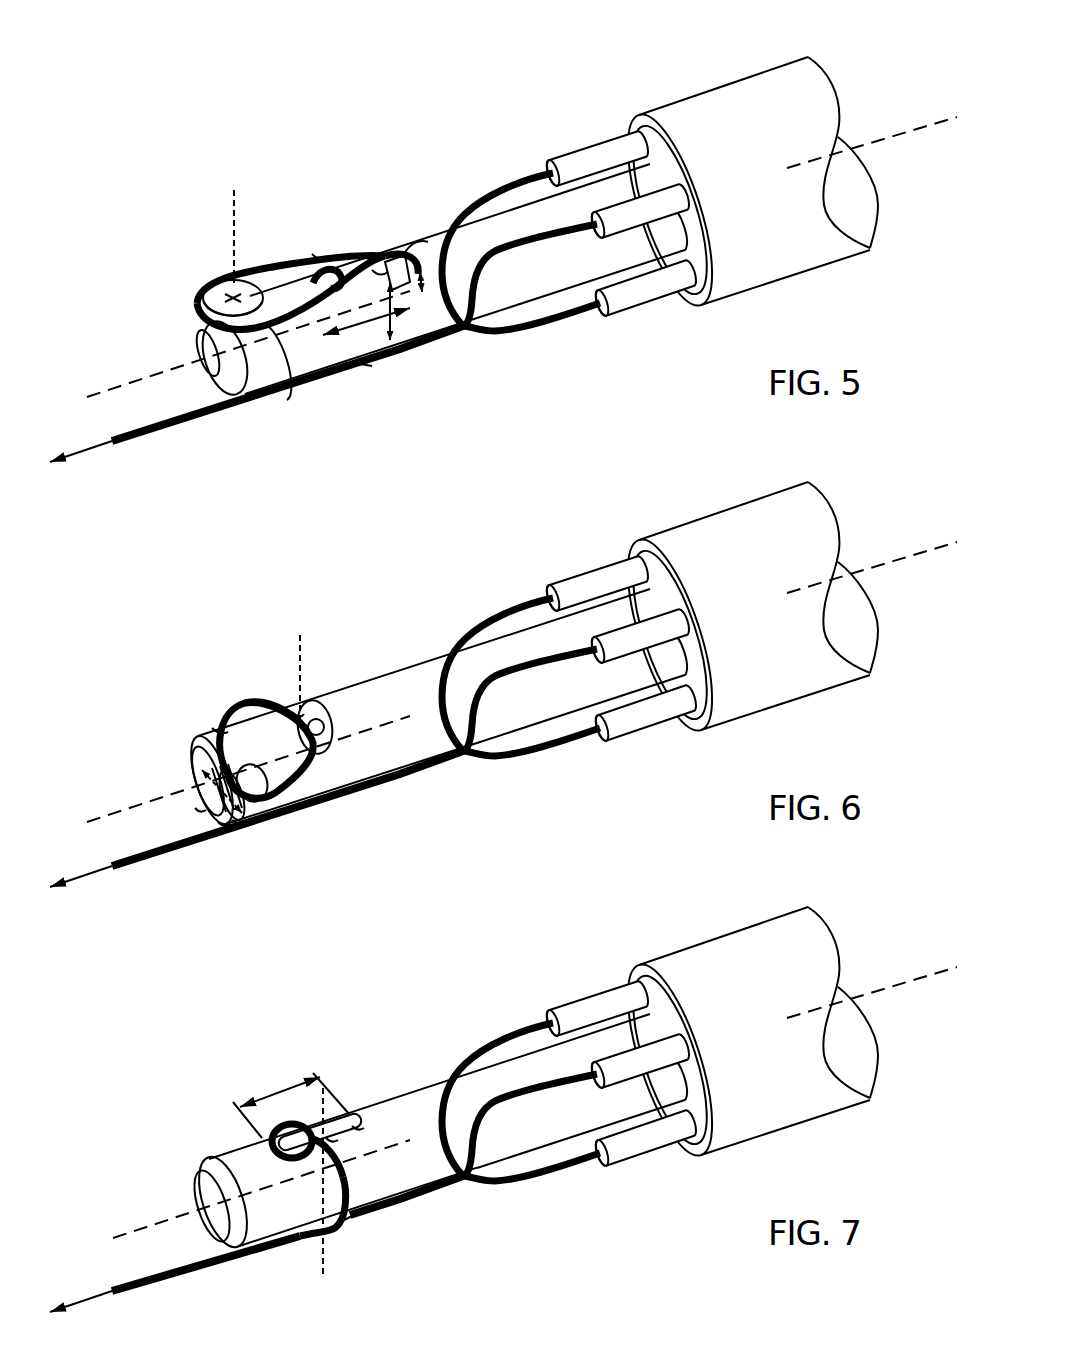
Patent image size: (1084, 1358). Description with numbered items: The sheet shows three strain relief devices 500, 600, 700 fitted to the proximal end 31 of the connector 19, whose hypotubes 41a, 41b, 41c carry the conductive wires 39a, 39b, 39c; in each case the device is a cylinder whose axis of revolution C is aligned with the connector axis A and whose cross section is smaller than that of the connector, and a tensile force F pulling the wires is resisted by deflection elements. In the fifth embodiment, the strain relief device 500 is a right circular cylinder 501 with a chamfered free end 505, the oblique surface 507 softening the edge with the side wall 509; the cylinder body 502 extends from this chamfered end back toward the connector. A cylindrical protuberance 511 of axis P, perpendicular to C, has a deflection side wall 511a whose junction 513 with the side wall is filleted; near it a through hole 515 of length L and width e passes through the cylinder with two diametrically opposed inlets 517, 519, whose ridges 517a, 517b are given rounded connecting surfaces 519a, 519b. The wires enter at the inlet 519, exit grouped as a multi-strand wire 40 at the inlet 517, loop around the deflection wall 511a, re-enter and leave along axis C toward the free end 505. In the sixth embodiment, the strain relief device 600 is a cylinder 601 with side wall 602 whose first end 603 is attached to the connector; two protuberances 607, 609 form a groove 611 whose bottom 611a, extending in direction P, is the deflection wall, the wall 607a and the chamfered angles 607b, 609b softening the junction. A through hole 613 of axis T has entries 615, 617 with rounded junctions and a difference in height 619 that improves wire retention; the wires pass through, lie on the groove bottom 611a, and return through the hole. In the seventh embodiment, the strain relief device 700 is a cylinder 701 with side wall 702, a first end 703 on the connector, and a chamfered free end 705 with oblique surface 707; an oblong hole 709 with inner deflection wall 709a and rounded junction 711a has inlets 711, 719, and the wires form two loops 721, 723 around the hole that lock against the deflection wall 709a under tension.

In FIG. 5, the connector 19 is at (770, 82).
In FIG. 6, the connector 19 is at (758, 578).
In FIG. 7, the connector 19 is at (758, 1003).
In FIG. 5, the proximal end of the connector 31 is at (667, 156).
In FIG. 6, the proximal end of the connector 31 is at (670, 635).
In FIG. 7, the proximal end of the connector 31 is at (670, 1060).
In FIG. 5, the hypotube 41a is at (597, 150).
In FIG. 6, the hypotube 41a is at (596, 539).
In FIG. 7, the hypotube 41a is at (596, 964).
In FIG. 5, the hypotube 41b is at (690, 187).
In FIG. 6, the hypotube 41b is at (675, 622).
In FIG. 7, the hypotube 41b is at (675, 1047).
In FIG. 5, the hypotube 41c is at (687, 293).
In FIG. 6, the hypotube 41c is at (652, 734).
In FIG. 7, the hypotube 41c is at (652, 1159).
In FIG. 5, the conductive wire 39a is at (490, 195).
In FIG. 6, the conductive wire 39a is at (497, 645).
In FIG. 7, the conductive wire 39a is at (497, 1070).
In FIG. 5, the conductive wire 39b is at (523, 240).
In FIG. 6, the conductive wire 39b is at (530, 636).
In FIG. 7, the conductive wire 39b is at (530, 1061).
In FIG. 5, the conductive wire 39c is at (580, 317).
In FIG. 6, the conductive wire 39c is at (539, 772).
In FIG. 7, the conductive wire 39c is at (539, 1197).
In FIG. 5, the multi-strand wire 40 is at (170, 433).
In FIG. 5, the axis of the connector A is at (897, 132).
In FIG. 6, the axis of the connector A is at (872, 542).
In FIG. 7, the axis of the connector A is at (872, 967).
In FIG. 5, the axis of revolution C is at (105, 392).
In FIG. 6, the axis of revolution C is at (95, 812).
In FIG. 7, the axis of revolution C is at (140, 1225).
In FIG. 5, the tensile force F is at (80, 456).
In FIG. 6, the tensile force F is at (78, 885).
In FIG. 7, the tensile force F is at (80, 1310).
In FIG. 5, the axis of revolution of the protuberance / direction of the deflection wall P is at (234, 207).
In FIG. 6, the axis of revolution of the protuberance / direction of the deflection wall P is at (185, 815).
In FIG. 5, the length of the through hole L is at (366, 333).
In FIG. 7, the length of the through hole L is at (270, 1090).
In FIG. 5, the width of the through hole e is at (429, 262).
In FIG. 6, the axis of the through hole T is at (302, 655).
In FIG. 7, the axis of the through hole T is at (325, 1277).
In FIG. 5, the strain relief device 500 is at (433, 150).
In FIG. 5, the cylinder 501 is at (400, 358).
In FIG. 5, the tube body portion 502 is at (507, 297).
In FIG. 5, the free end 505 is at (203, 373).
In FIG. 5, the oblique chamfered surface 507 is at (236, 398).
In FIG. 5, the side wall of the cylinder 509 is at (430, 245).
In FIG. 5, the cylindrical protuberance 511 is at (214, 284).
In FIG. 5, the deflection side wall 511a is at (285, 360).
In FIG. 5, the junction 513 is at (325, 405).
In FIG. 5, the through hole 515 is at (320, 252).
In FIG. 5, the inlet of the through hole 517 is at (337, 258).
In FIG. 5, the ridge 517a is at (377, 268).
In FIG. 5, the ridge 517b is at (267, 262).
In FIG. 5, the inlet of the through hole 519 is at (370, 362).
In FIG. 5, the rounded connecting surface 519a is at (355, 240).
In FIG. 5, the rounded connecting surface 519b is at (318, 282).
In FIG. 6, the strain relief device 600 is at (409, 543).
In FIG. 6, the cylinder 601 is at (412, 780).
In FIG. 6, the side wall 602 is at (582, 723).
In FIG. 6, the first end of the cylinder 603 is at (696, 634).
In FIG. 6, the protuberance 607 is at (182, 782).
In FIG. 6, the wall of the protrusion 607a is at (198, 805).
In FIG. 6, the angle of the wall 607b is at (235, 822).
In FIG. 6, the protuberance 609 is at (200, 740).
In FIG. 6, the angle of the wall 609b is at (215, 728).
In FIG. 6, the groove 611 is at (222, 824).
In FIG. 6, the groove bottom / deflection wall 611a is at (275, 812).
In FIG. 6, the through hole 613 is at (327, 722).
In FIG. 6, the entry of the through hole 615 is at (298, 710).
In FIG. 6, the entry of the through hole 617 is at (343, 799).
In FIG. 6, the difference in height 619 is at (258, 710).
In FIG. 7, the strain relief device 700 is at (409, 968).
In FIG. 7, the cylinder 701 is at (400, 1195).
In FIG. 7, the side wall 702 is at (582, 1148).
In FIG. 5, the first end of the cylinder 703 is at (692, 240).
In FIG. 7, the first end of the cylinder 703 is at (696, 1059).
In FIG. 7, the free end 705 is at (200, 1192).
In FIG. 7, the oblique chamfered surface 707 is at (210, 1160).
In FIG. 7, the oblong hole 709 is at (305, 1126).
In FIG. 7, the inner deflection wall 709a is at (332, 1130).
In FIG. 7, the inlet of the through hole 711 is at (350, 1113).
In FIG. 7, the junction 711a is at (362, 1130).
In FIG. 7, the inlet of the through hole 719 is at (356, 1219).
In FIG. 7, the loop 721 is at (270, 1138).
In FIG. 7, the loop 723 is at (349, 1182).